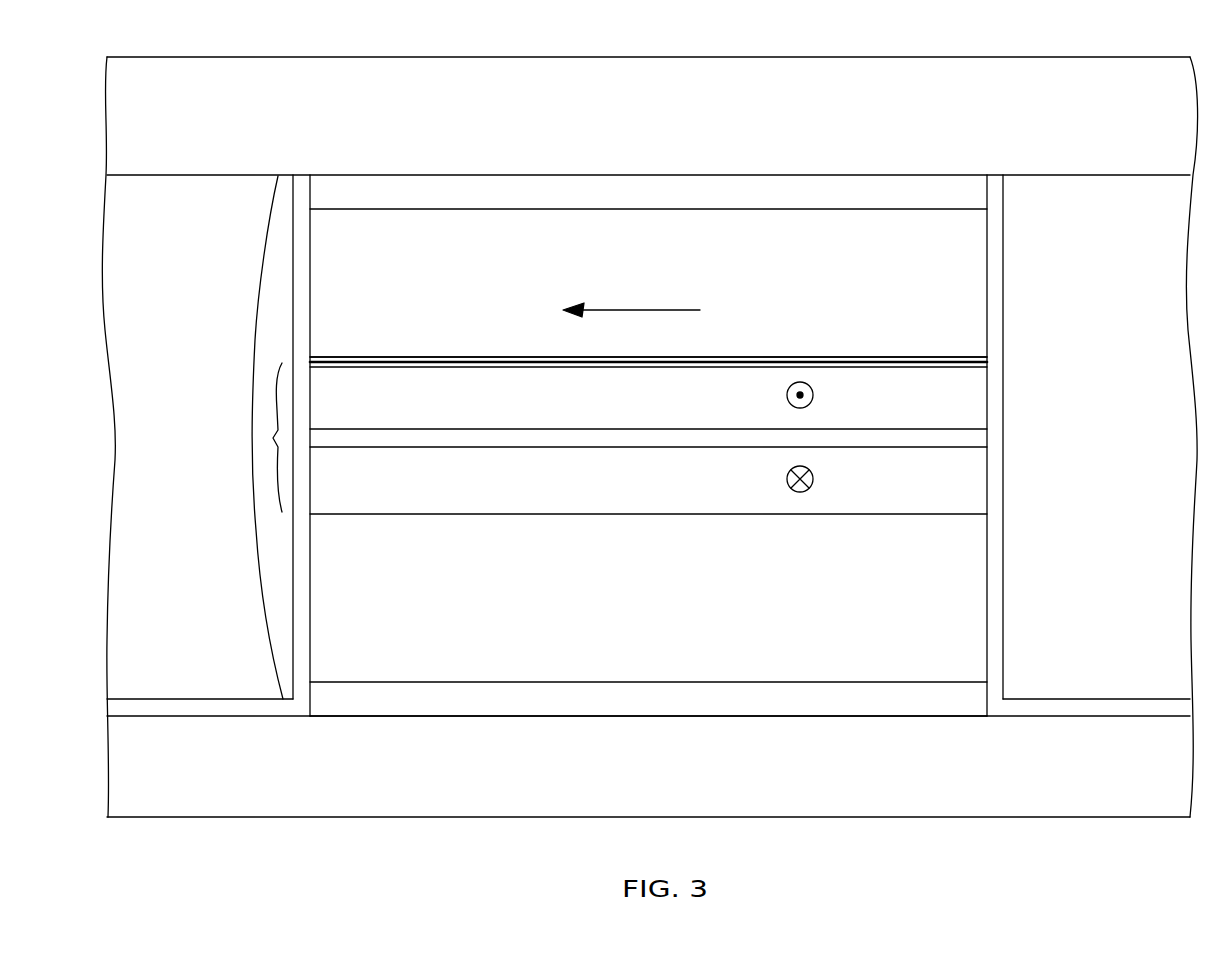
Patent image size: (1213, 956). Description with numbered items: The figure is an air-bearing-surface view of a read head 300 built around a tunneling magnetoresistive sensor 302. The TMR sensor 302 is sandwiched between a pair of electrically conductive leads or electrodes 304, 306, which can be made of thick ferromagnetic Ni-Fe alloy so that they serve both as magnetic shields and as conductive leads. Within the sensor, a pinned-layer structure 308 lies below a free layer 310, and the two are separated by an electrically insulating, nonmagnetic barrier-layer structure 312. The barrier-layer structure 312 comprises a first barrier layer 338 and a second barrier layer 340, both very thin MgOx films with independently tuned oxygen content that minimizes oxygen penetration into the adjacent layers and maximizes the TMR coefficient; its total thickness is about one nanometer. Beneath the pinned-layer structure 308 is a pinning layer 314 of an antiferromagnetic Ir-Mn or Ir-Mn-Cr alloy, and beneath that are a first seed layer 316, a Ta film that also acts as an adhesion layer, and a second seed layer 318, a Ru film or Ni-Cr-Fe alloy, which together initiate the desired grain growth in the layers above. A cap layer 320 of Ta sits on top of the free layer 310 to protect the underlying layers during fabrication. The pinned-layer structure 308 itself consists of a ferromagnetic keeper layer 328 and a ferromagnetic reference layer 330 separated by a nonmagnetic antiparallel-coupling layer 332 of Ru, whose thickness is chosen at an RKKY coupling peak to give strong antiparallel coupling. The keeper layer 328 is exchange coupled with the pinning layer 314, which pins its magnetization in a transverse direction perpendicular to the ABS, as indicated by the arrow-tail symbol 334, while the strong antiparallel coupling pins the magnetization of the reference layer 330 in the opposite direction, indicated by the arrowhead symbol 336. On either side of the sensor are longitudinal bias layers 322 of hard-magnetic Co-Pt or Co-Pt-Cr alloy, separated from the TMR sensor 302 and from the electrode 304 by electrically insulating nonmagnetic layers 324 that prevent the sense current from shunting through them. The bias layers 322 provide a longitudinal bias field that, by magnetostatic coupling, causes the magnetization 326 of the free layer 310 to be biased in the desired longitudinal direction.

The read head 300 is at (818, 45).
The tunneling magnetoresistive (TMR) sensor 302 is at (263, 212).
The electrode 304 is at (685, 758).
The electrode 306 is at (665, 125).
The pinned-layer structure 308 is at (275, 378).
The free layer 310 is at (738, 261).
The barrier-layer structure 312 is at (988, 360).
The pinning layer 314 is at (657, 581).
The first seed layer 316 is at (843, 712).
The second seed layer 318 is at (758, 690).
The cap layer 320 is at (643, 193).
The longitudinal bias layers 322 is at (195, 327).
The electrically insulating nonmagnetic layers 324 is at (186, 708).
The magnetization of the free layer 326 is at (651, 310).
The keeper layer 328 is at (735, 483).
The reference layer 330 is at (732, 397).
The antiparallel-coupling layer 332 is at (412, 436).
The arrow-tail symbol 334 is at (813, 479).
The arrowhead symbol 336 is at (813, 396).
The first barrier layer 338 is at (878, 365).
The second barrier layer 340 is at (878, 360).